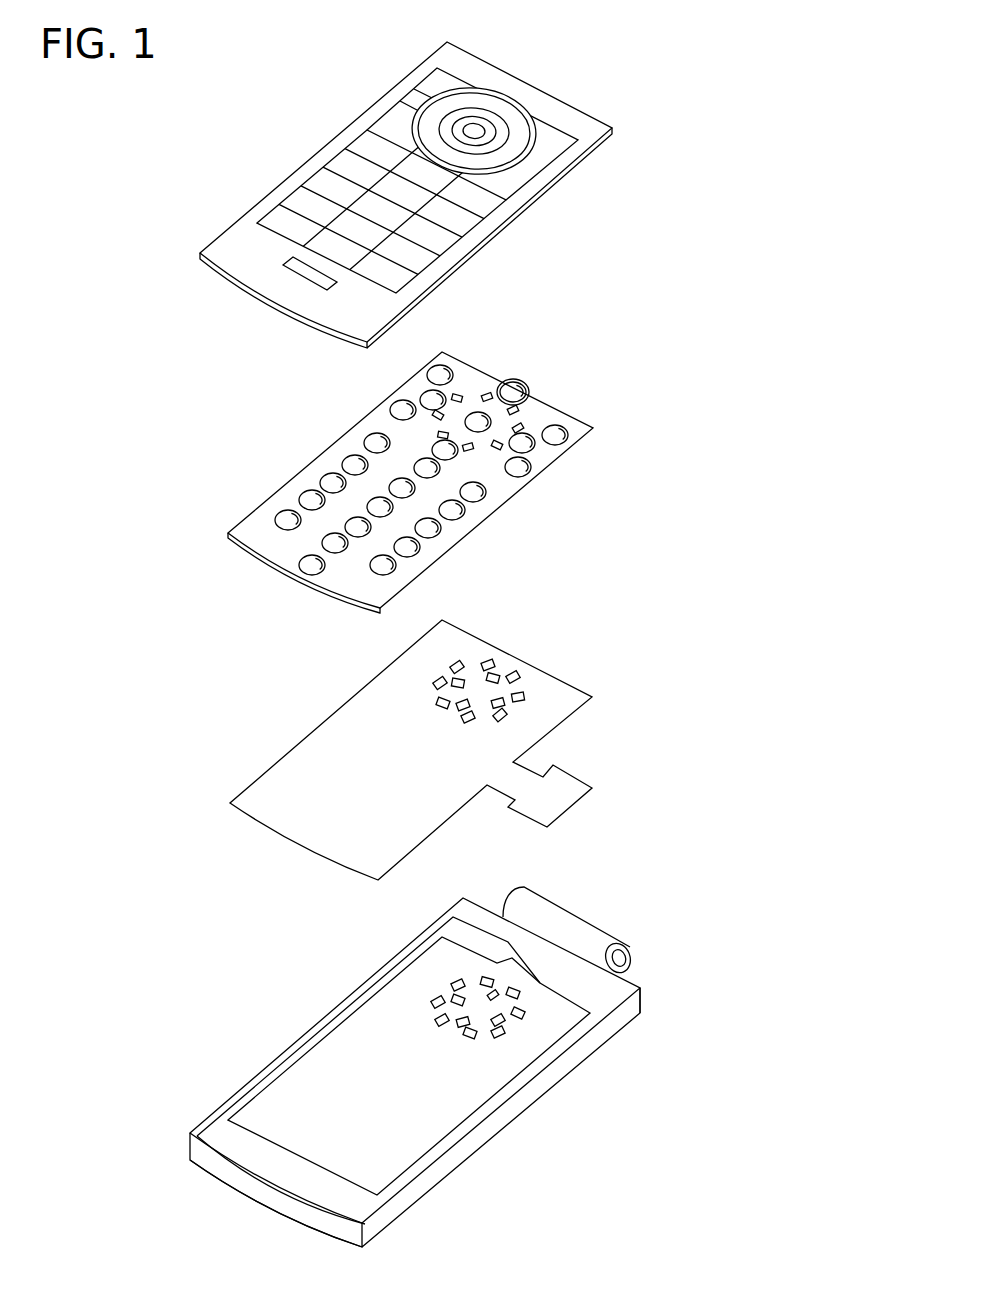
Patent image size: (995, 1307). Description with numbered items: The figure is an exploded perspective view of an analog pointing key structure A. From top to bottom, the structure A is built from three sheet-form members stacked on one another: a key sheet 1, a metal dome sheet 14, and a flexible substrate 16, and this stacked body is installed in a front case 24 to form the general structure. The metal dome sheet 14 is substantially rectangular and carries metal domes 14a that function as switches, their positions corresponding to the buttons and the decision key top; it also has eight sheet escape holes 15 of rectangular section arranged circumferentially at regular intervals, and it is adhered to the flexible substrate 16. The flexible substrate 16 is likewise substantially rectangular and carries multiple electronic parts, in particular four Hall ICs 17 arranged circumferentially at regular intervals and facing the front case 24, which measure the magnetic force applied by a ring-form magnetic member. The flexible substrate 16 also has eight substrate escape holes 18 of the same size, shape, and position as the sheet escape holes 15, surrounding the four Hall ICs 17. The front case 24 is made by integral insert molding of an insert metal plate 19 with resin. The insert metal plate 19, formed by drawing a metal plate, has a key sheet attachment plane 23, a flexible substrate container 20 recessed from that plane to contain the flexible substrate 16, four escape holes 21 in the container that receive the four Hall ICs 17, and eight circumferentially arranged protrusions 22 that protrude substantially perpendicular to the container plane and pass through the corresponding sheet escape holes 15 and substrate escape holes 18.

The analog pointing key structure A is at (583, 77).
The key sheet 1 is at (301, 167).
The metal dome sheet 14 is at (401, 454).
The metal domes 14a is at (377, 437).
The sheet escape holes 15 is at (518, 426).
The flexible substrate 16 is at (434, 724).
The Hall ICs 17 is at (463, 705).
The substrate escape holes 18 is at (443, 703).
The insert metal plate 19 is at (463, 1054).
The flexible substrate container 20 is at (547, 1025).
The escape holes 21 is at (514, 992).
The protrusions 22 is at (499, 1034).
The key sheet attachment plane 23 is at (362, 1205).
The front case 24 is at (640, 1003).